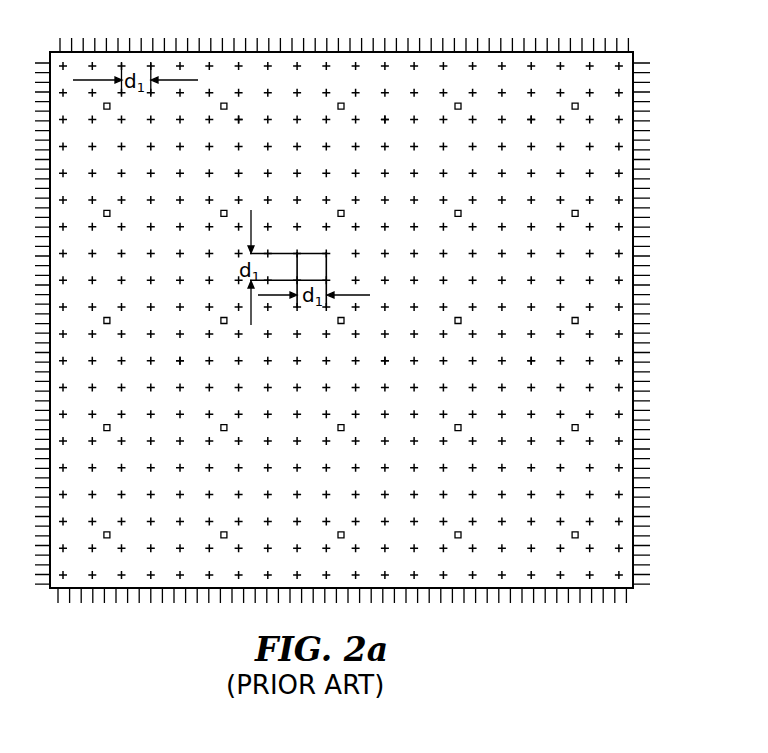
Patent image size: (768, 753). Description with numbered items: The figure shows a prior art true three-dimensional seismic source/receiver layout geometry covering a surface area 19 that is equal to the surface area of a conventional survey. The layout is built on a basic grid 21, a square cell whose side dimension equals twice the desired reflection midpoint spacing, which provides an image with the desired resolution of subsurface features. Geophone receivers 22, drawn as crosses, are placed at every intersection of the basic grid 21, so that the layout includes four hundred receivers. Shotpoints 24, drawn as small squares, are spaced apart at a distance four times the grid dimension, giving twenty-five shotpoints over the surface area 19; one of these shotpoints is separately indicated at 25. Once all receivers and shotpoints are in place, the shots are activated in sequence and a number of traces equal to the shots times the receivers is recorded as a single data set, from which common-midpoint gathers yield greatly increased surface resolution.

The surface area 19 is at (634, 236).
The basic grid 21 is at (327, 253).
The geophone receivers 22 is at (542, 370).
The shotpoints 24 is at (119, 319).
The reference element 25 is at (345, 320).